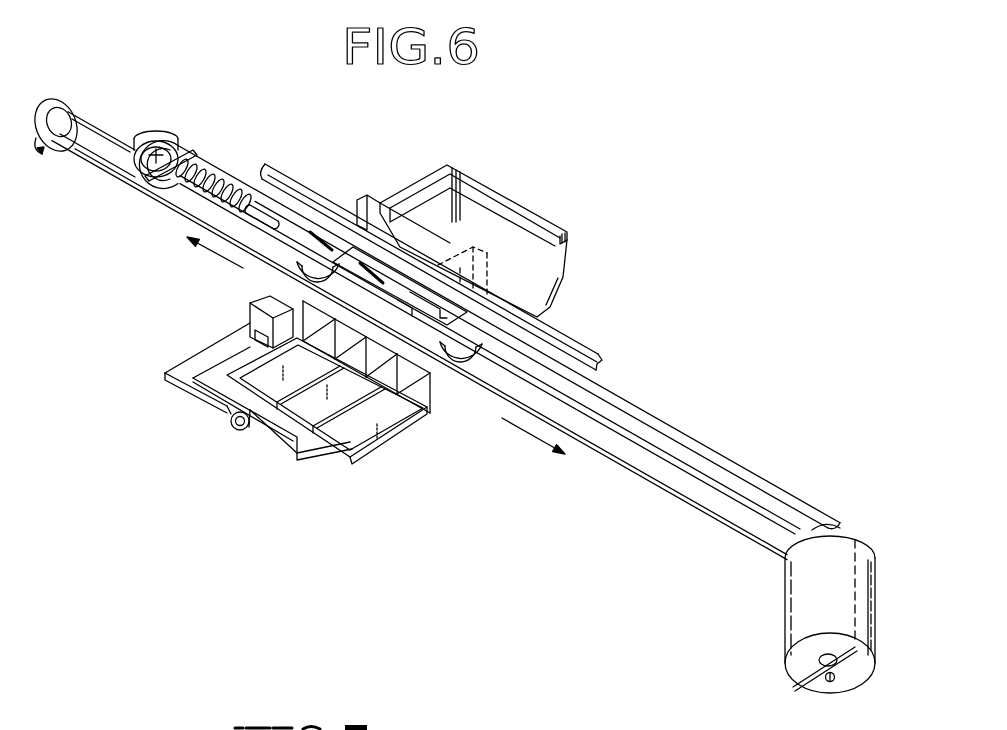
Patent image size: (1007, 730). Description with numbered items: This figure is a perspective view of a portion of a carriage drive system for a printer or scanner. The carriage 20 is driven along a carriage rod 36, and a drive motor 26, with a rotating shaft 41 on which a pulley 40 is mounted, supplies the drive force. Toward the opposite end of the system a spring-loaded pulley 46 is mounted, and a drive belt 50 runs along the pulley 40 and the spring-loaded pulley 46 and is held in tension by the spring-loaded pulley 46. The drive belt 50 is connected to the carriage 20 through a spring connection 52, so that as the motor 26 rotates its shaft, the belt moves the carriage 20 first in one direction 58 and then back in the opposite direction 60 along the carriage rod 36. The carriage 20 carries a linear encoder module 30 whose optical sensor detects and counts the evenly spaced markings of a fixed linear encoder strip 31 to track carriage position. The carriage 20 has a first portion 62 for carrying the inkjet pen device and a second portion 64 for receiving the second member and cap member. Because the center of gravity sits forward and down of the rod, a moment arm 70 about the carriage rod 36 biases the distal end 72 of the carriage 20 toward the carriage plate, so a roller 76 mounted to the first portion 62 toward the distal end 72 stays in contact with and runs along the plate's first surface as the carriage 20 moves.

The carriage 20 is at (505, 178).
The drive motor 26 is at (790, 598).
The linear encoder module 30 is at (487, 260).
The linear encoder strip 31 is at (600, 351).
The carriage rod 36 is at (100, 136).
The pulley 40 is at (838, 522).
The rotating shaft 41 is at (838, 681).
The spring-loaded pulley 46 is at (131, 173).
The drive belt 50 is at (737, 464).
The spring connection 52 is at (427, 325).
The first direction 58 is at (208, 251).
The opposite direction 60 is at (532, 436).
The first portion 62 is at (200, 352).
The second portion 64 is at (413, 181).
The moment arm 70 is at (63, 98).
The distal end 72 is at (203, 400).
The roller 76 is at (246, 431).